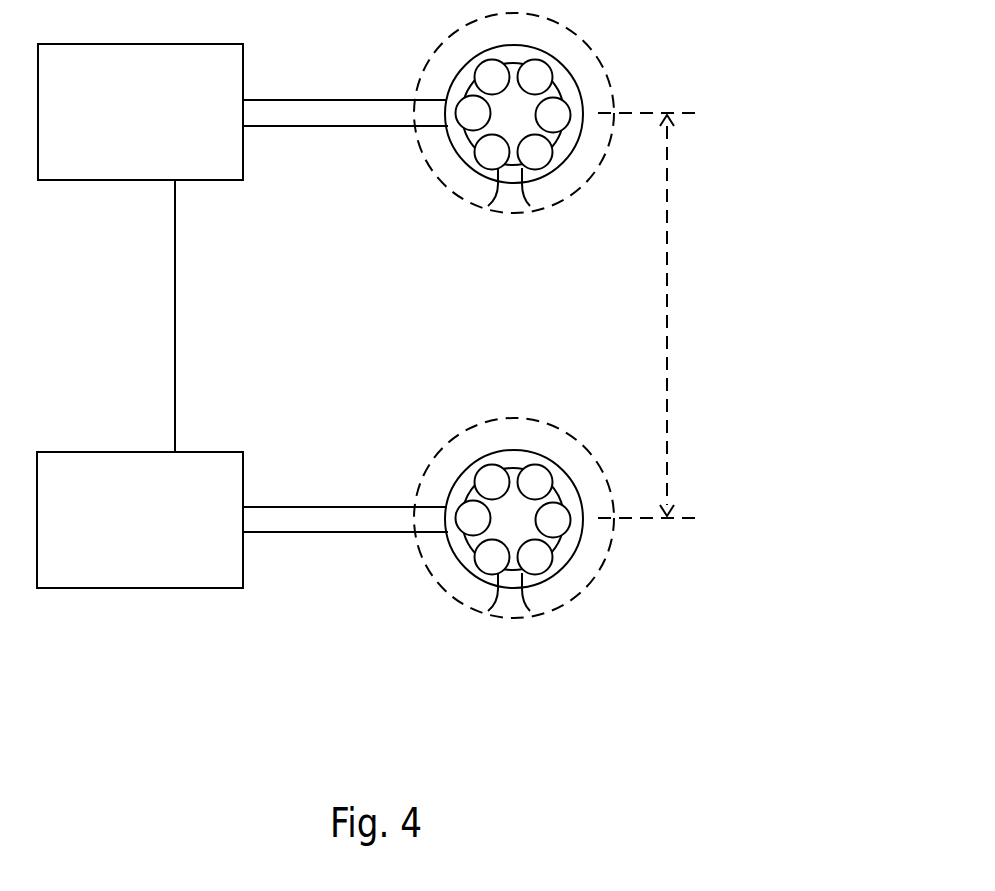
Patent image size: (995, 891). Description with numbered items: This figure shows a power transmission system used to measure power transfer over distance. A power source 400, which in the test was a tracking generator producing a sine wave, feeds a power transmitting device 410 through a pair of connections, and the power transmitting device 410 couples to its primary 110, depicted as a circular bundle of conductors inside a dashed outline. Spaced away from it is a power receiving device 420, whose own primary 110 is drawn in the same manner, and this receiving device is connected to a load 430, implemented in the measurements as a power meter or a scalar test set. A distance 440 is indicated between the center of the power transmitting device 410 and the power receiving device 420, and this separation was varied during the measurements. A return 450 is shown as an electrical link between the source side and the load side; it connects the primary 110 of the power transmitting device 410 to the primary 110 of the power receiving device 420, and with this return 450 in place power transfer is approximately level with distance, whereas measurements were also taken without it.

The primary 110 is at (452, 147).
The power source 400 is at (140, 112).
The power transmitting device 410 is at (603, 63).
The power receiving device 420 is at (591, 584).
The load 430 is at (140, 520).
The distance 440 is at (708, 273).
The return 450 is at (183, 333).